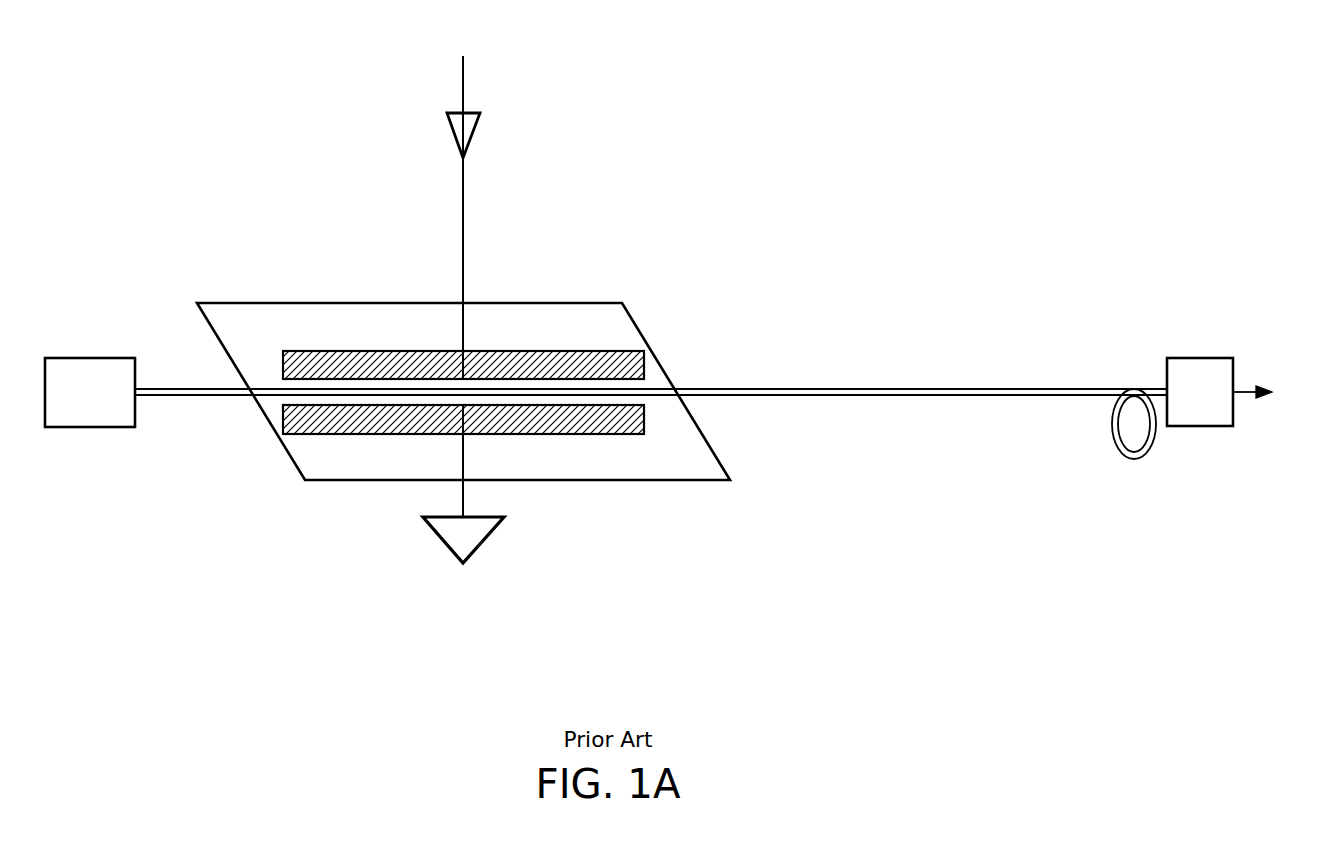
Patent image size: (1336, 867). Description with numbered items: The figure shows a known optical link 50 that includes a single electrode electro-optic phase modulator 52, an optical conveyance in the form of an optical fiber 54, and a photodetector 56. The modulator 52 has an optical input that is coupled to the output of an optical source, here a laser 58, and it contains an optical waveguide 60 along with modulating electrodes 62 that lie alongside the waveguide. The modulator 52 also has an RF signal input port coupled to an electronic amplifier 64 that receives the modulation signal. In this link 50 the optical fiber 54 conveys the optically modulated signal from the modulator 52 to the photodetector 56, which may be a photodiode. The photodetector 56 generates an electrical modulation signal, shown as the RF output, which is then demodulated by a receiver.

The optical link 50 is at (644, 72).
The single electrode electro-optic phase modulator 52 is at (381, 336).
The optical fiber 54 is at (1134, 459).
The photodetector 56 is at (1186, 414).
The laser 58 is at (76, 416).
The optical waveguide 60 is at (280, 402).
The modulating electrodes 62 is at (525, 351).
The electronic amplifier 64 is at (477, 127).